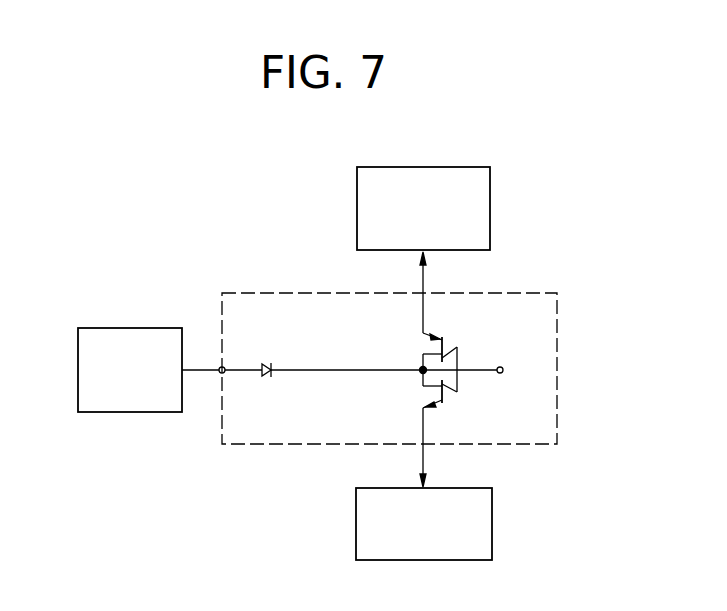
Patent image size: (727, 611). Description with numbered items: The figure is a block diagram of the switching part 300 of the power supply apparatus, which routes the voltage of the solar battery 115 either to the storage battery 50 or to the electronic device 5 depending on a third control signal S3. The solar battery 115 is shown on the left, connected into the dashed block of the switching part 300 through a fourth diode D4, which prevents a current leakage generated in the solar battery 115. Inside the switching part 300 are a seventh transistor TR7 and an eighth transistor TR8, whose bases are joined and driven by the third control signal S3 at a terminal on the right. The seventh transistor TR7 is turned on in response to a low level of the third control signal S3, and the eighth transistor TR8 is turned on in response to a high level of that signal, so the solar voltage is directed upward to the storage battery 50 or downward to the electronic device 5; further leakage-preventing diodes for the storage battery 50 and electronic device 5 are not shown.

The electronic device 5 is at (492, 526).
The storage battery 50 is at (490, 211).
The solar battery 115 is at (132, 328).
The switching part 300 is at (409, 369).
The fourth diode D4 is at (267, 358).
The seventh transistor TR7 is at (420, 351).
The eighth transistor TR8 is at (420, 389).
The third control signal S3 is at (514, 370).